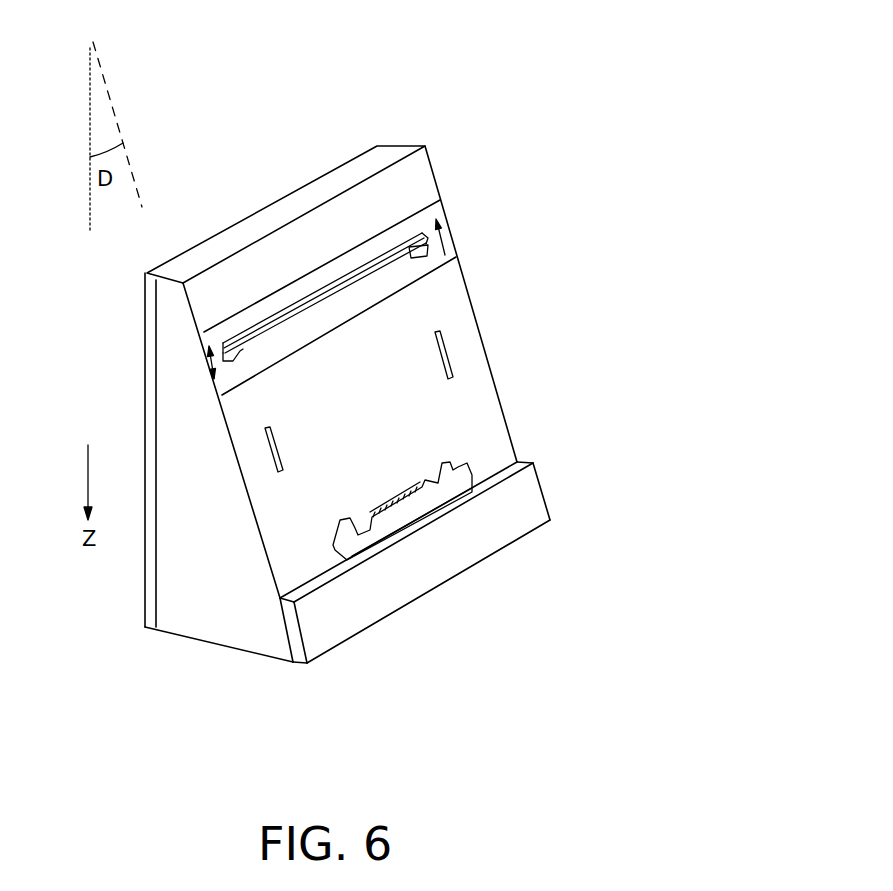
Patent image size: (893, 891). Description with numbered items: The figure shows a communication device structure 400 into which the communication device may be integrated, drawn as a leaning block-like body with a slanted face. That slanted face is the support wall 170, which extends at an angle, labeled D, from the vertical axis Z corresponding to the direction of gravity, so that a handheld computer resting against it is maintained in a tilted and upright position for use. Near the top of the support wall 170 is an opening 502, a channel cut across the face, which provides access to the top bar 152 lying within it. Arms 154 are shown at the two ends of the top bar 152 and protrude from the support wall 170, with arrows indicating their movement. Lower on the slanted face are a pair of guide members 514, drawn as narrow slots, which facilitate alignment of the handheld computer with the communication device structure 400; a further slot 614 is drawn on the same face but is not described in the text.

The communication device structure 400 is at (480, 175).
The opening 502 is at (385, 287).
The top bar 152 is at (343, 287).
The arms 154 is at (208, 346).
The guide members 514 is at (267, 452).
The slot 614 is at (445, 343).
The support wall 170 is at (388, 453).